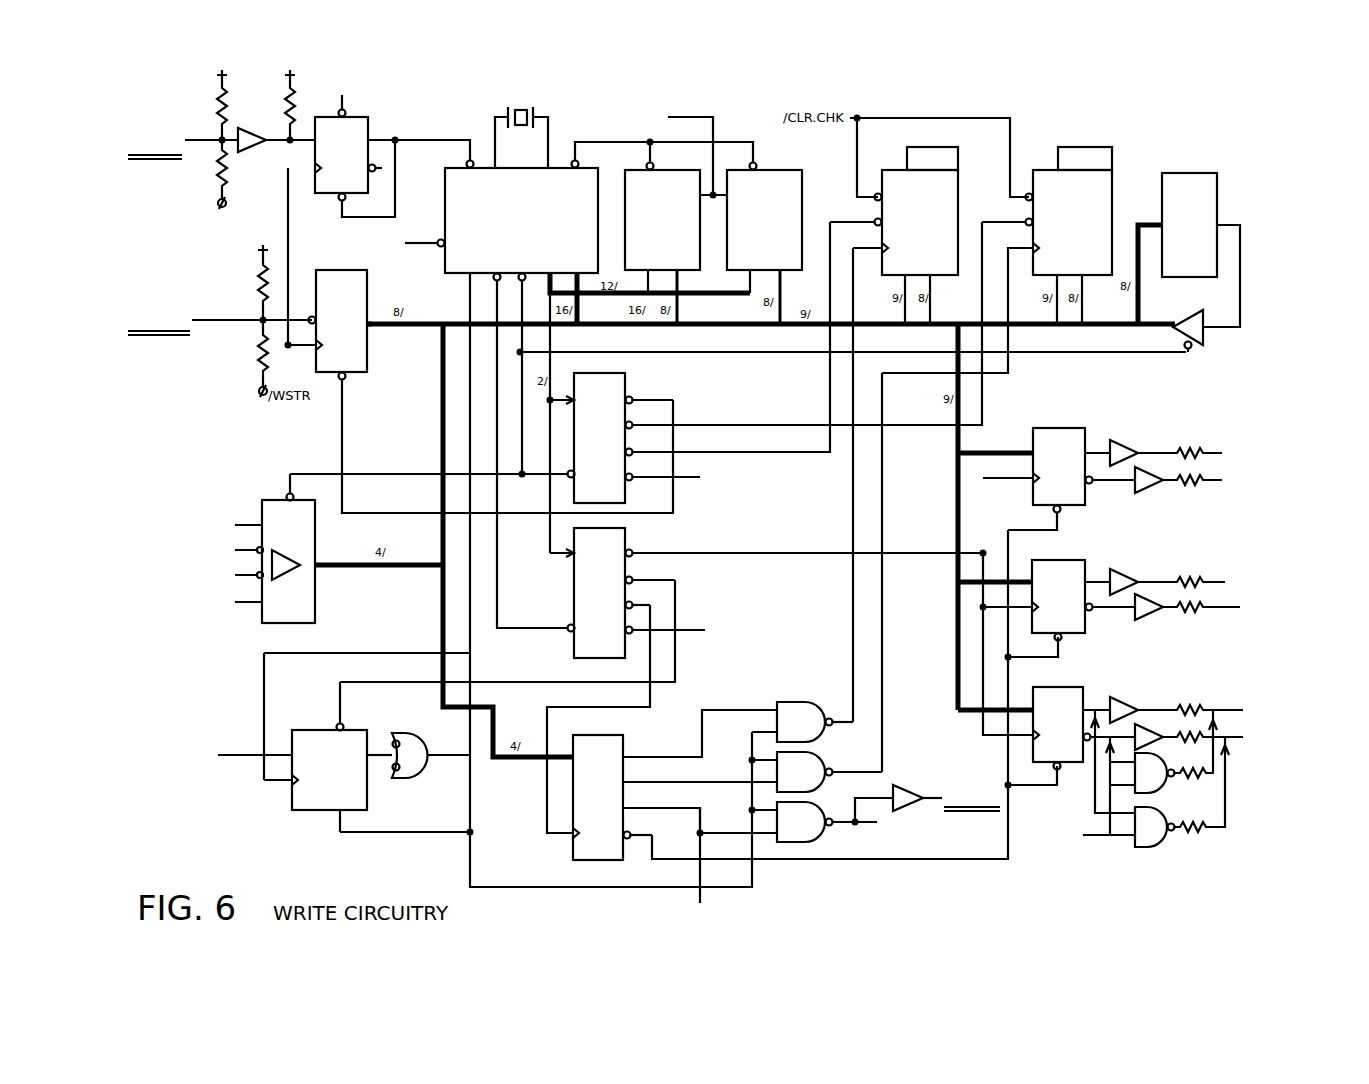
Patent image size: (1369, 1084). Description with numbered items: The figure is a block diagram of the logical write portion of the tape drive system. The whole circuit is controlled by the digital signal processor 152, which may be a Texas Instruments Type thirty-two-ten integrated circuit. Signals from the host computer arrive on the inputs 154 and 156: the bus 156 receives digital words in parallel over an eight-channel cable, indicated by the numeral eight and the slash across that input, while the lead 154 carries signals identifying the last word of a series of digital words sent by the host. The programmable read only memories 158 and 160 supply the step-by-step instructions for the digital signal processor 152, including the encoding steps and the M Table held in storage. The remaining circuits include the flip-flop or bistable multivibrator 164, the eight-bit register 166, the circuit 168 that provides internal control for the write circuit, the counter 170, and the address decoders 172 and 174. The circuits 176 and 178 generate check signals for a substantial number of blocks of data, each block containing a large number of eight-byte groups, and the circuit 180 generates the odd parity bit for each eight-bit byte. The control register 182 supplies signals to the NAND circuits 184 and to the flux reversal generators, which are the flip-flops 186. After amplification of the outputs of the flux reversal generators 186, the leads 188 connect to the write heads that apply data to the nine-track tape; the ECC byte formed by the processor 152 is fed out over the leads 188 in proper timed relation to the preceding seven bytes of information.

The digital signal processor 152 is at (445, 190).
The input lead 154 is at (200, 140).
The input bus 156 is at (205, 322).
The programmable read only memory 158 is at (625, 185).
The programmable read only memory 160 is at (818, 163).
The flip-flop 164 is at (368, 126).
The 8-bit register 166 is at (367, 362).
The internal control circuit 168 is at (262, 503).
The counter 170 is at (305, 810).
The address decoder 172 is at (625, 385).
The address decoder 174 is at (625, 540).
The check signal generating circuit 176 is at (958, 190).
The check signal generating circuit 178 is at (1112, 176).
The parity generating circuit 180 is at (1217, 197).
The control register 182 is at (623, 742).
The NAND circuits 184 is at (820, 740).
The flux reversal generators 186 is at (1085, 428).
The output leads 188 is at (1215, 471).